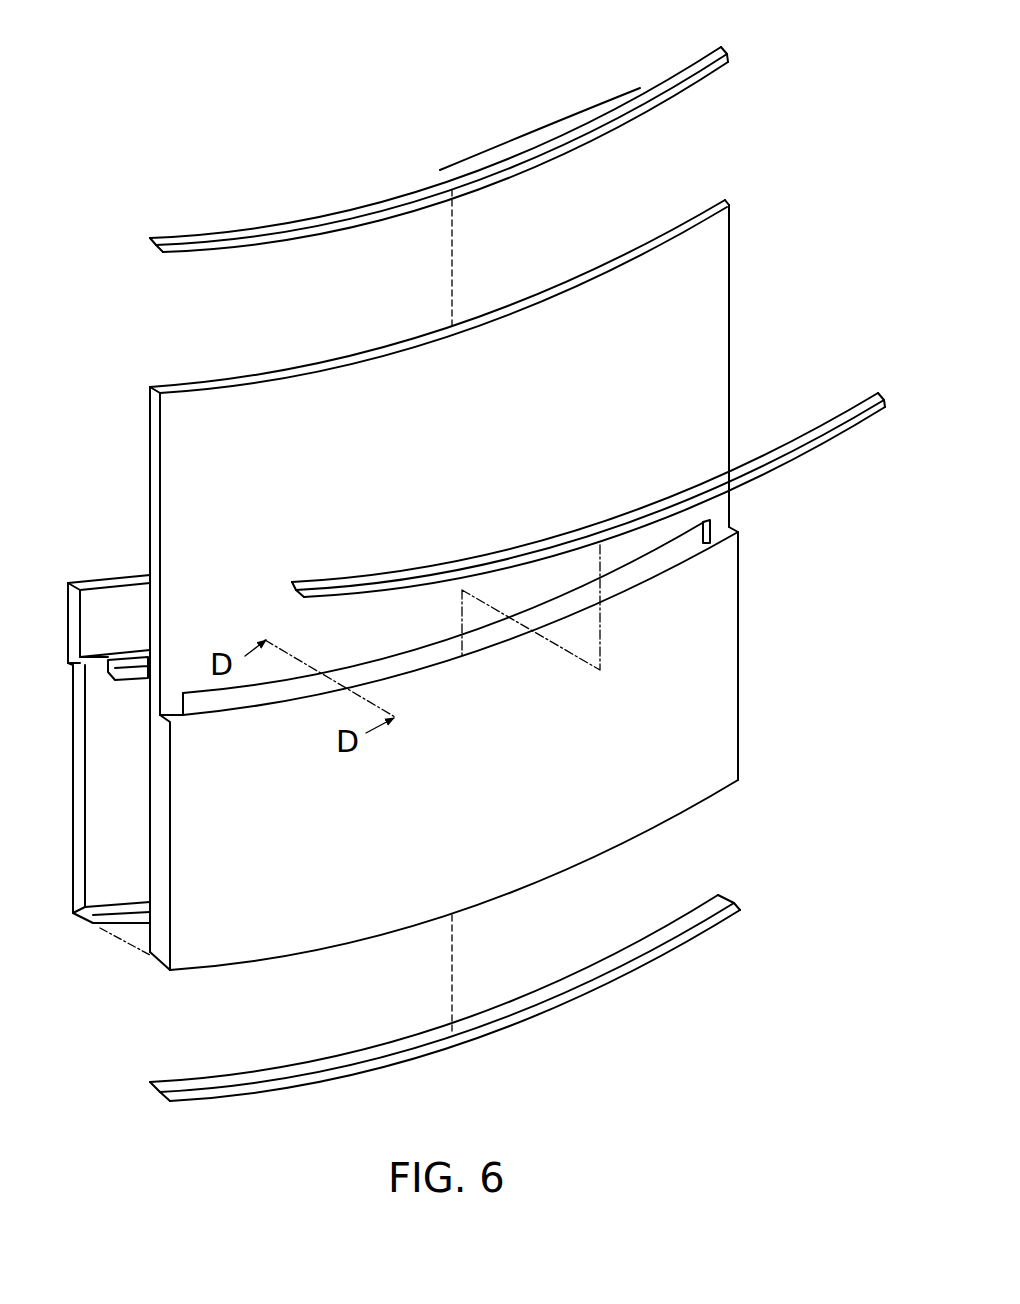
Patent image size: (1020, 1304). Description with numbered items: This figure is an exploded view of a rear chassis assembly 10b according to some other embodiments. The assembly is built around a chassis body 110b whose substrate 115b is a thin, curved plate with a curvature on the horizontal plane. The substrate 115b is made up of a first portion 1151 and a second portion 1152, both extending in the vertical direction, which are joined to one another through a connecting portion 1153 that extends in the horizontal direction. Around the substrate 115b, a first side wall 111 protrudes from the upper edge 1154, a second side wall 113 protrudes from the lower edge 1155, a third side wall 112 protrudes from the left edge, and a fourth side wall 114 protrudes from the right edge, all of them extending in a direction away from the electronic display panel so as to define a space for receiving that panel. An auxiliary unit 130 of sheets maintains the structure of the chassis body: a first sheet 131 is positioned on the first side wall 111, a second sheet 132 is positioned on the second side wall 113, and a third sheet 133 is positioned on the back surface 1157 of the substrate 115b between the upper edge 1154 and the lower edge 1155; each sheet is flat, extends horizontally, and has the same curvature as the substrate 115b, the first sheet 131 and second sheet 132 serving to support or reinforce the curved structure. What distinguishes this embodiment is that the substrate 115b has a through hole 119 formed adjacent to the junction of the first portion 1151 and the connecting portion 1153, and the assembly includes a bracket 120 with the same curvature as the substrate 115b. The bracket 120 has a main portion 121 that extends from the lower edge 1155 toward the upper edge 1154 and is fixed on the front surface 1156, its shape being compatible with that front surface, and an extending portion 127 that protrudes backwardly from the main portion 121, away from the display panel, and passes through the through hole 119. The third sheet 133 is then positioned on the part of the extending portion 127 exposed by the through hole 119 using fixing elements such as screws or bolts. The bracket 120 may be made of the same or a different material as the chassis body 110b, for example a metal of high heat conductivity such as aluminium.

The rear chassis assembly 10b is at (113, 78).
The auxiliary unit 130 is at (344, 164).
The first sheet 131 is at (592, 140).
The first side wall 111 is at (716, 197).
The chassis body 110b is at (740, 246).
The substrate 115b is at (713, 272).
The first portion 1151 is at (712, 313).
The fourth side wall 114 is at (732, 358).
The upper edge 1154 is at (413, 352).
The front surface 1156 is at (193, 420).
The back surface 1157 is at (197, 430).
The bracket 120 is at (96, 558).
The extending portion 127 is at (140, 652).
The main portion 121 is at (90, 614).
The third sheet 133 is at (800, 463).
The connecting portion 1153 is at (742, 535).
The second portion 1152 is at (728, 637).
The through hole 119 is at (632, 582).
The lower edge 1155 is at (700, 800).
The second side wall 113 is at (672, 822).
The second sheet 132 is at (655, 957).
The third side wall 112 is at (163, 942).